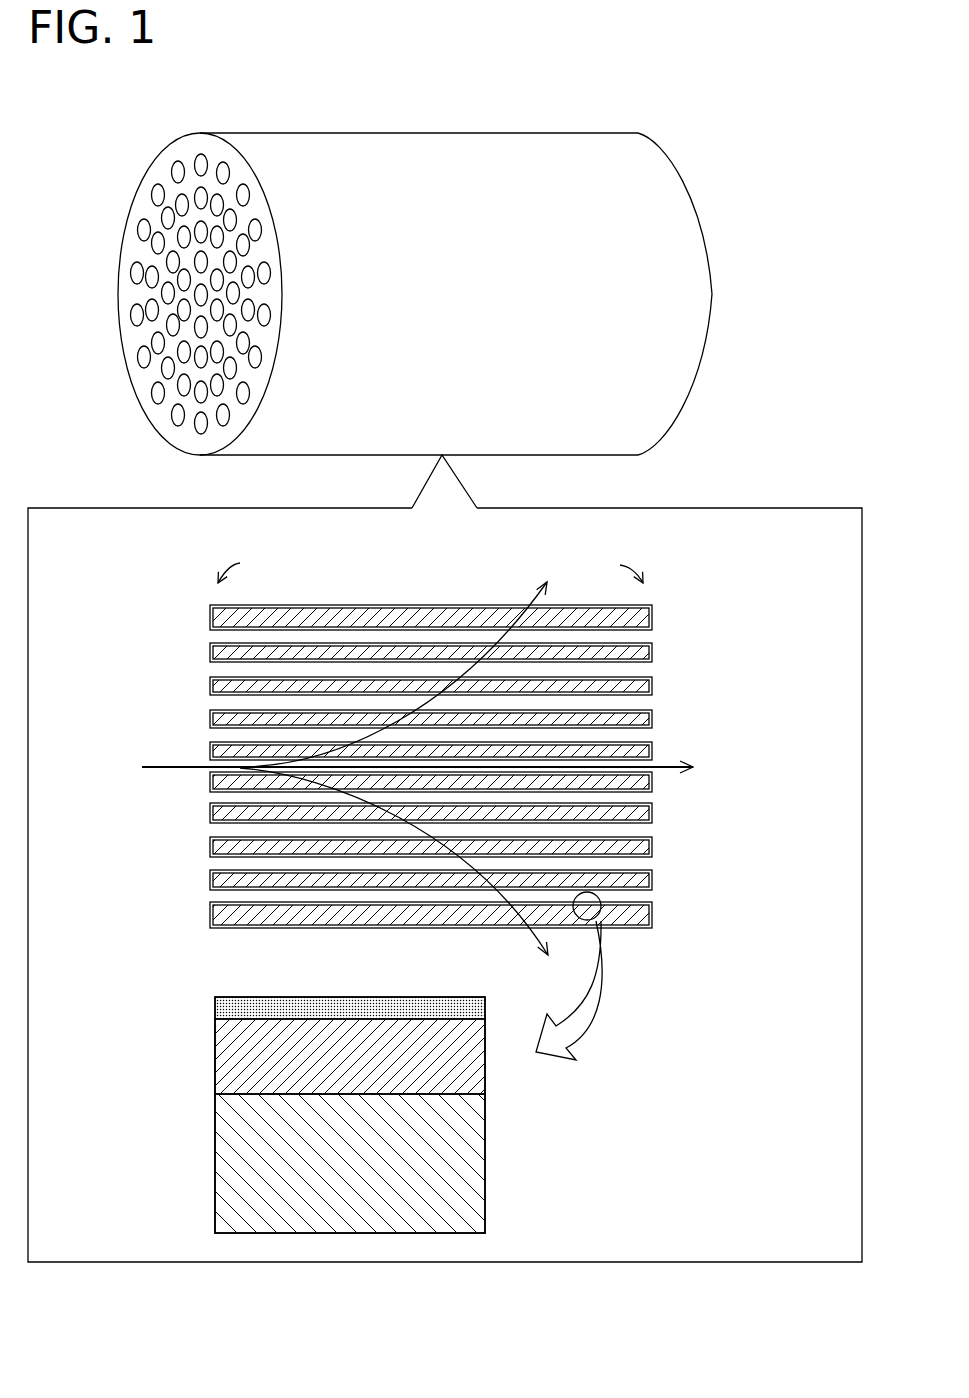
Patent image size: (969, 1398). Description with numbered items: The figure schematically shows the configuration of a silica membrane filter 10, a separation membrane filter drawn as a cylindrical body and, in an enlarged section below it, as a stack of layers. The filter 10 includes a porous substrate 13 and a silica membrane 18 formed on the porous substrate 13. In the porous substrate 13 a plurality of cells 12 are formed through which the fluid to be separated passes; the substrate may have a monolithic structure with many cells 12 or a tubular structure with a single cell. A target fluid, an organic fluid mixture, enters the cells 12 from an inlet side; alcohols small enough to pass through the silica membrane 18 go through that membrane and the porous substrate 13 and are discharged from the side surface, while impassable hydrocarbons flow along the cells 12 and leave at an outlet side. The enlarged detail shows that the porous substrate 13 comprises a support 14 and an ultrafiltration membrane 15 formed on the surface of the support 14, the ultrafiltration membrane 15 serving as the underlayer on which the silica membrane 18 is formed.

The silica membrane filter 10 is at (627, 108).
The cells 12 is at (133, 310).
The porous substrate 13 is at (252, 845).
The support 14 is at (203, 1096).
The ultrafiltration membrane 15 is at (203, 1022).
The silica membrane 18 is at (203, 997).